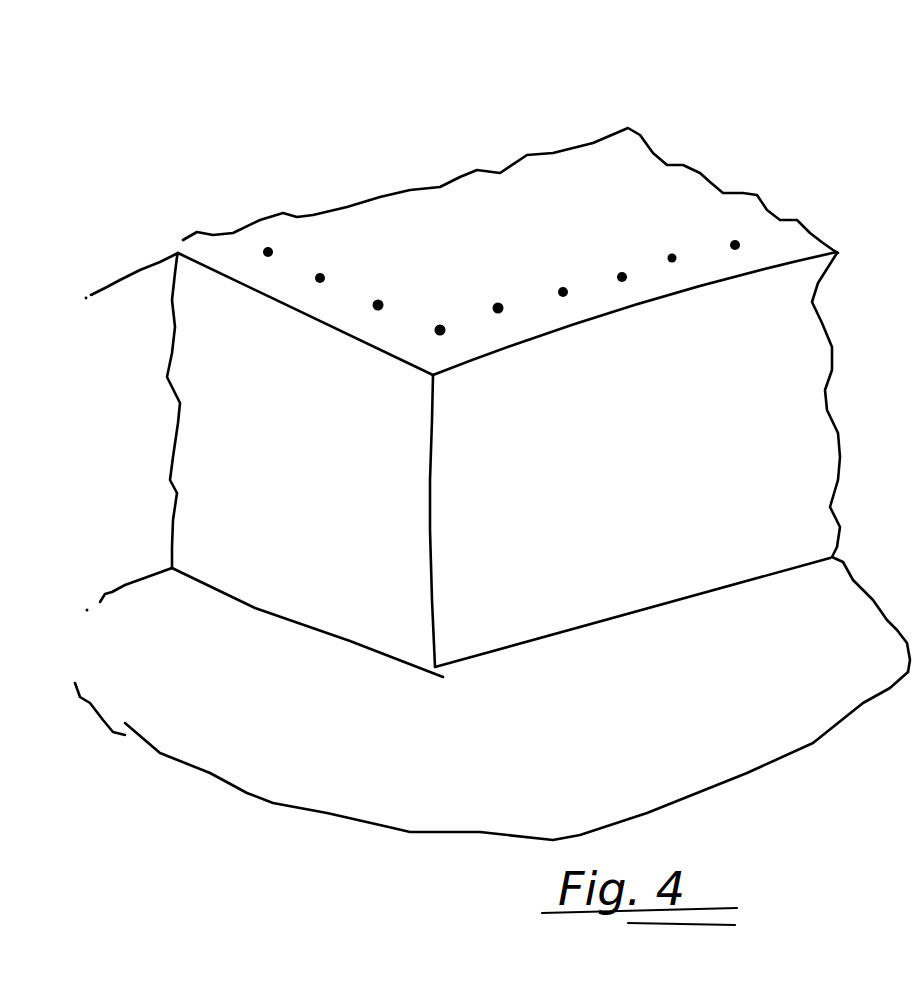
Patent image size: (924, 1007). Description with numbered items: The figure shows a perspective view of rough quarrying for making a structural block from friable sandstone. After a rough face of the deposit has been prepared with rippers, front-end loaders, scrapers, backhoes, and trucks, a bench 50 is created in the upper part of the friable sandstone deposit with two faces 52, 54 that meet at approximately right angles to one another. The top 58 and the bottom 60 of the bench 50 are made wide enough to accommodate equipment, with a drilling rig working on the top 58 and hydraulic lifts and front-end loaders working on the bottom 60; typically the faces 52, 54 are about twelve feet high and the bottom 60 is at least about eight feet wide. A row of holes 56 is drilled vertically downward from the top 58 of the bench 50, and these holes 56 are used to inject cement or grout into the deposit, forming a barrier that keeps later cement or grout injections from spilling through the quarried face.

The bench 50 is at (462, 354).
The face 52 is at (300, 578).
The face 54 is at (630, 588).
The holes 56 is at (322, 275).
The top 58 is at (338, 228).
The bottom 60 is at (347, 742).